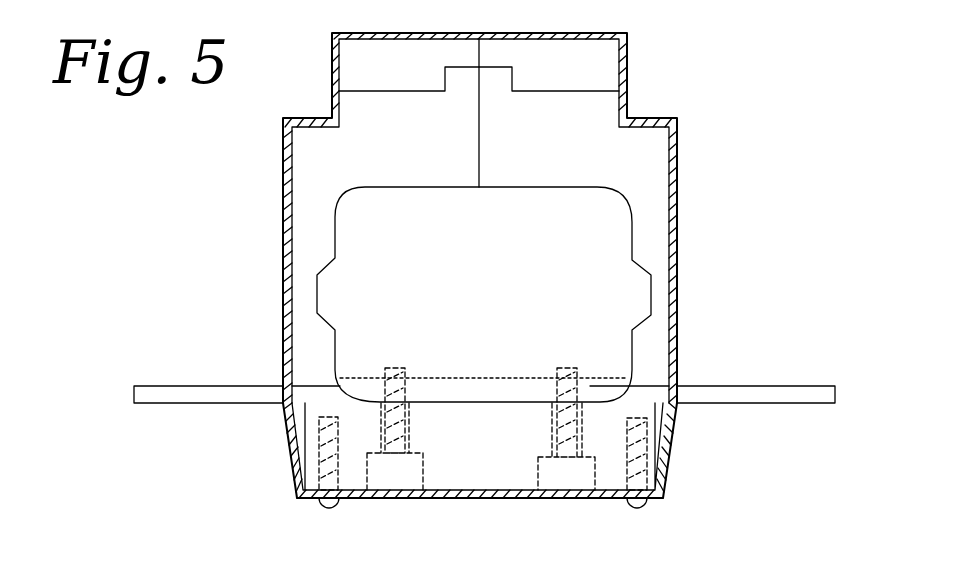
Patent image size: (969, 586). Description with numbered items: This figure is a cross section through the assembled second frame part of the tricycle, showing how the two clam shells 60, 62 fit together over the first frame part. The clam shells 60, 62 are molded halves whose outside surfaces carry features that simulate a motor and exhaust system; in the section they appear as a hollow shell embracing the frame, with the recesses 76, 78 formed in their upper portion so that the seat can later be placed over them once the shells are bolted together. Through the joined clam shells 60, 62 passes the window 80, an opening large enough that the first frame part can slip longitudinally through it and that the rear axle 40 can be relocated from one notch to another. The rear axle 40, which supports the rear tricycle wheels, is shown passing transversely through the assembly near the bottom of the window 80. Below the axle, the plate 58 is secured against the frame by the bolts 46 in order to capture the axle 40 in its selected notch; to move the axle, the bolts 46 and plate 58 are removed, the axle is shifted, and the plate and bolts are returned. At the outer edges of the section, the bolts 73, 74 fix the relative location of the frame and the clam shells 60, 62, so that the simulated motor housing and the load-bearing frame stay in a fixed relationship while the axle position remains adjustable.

The rear axle 40 is at (770, 385).
The bolts 46 is at (397, 480).
The plate 58 is at (490, 478).
The clam shell 60 is at (283, 237).
The clam shell 62 is at (677, 232).
The bolt 73 is at (322, 510).
The bolt 74 is at (645, 505).
The recess 76 is at (332, 68).
The recess 78 is at (627, 75).
The window 80 is at (496, 294).